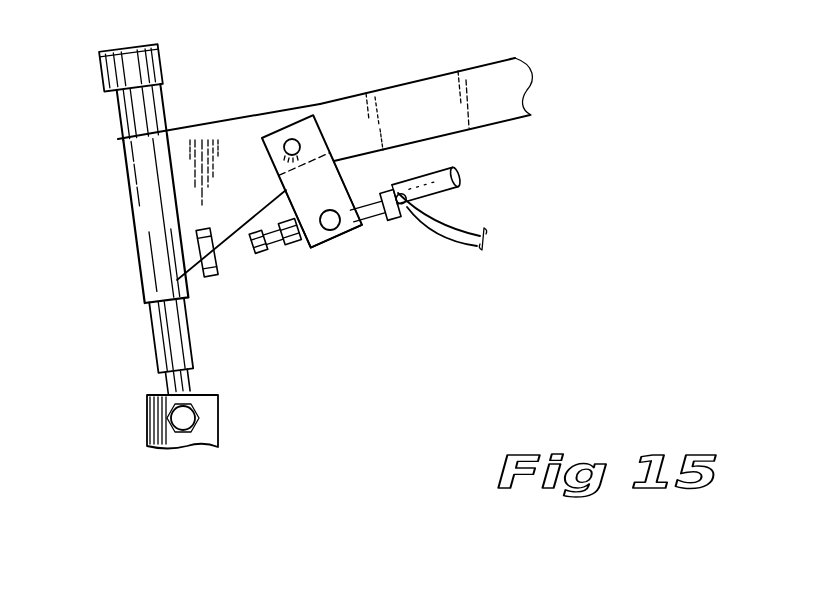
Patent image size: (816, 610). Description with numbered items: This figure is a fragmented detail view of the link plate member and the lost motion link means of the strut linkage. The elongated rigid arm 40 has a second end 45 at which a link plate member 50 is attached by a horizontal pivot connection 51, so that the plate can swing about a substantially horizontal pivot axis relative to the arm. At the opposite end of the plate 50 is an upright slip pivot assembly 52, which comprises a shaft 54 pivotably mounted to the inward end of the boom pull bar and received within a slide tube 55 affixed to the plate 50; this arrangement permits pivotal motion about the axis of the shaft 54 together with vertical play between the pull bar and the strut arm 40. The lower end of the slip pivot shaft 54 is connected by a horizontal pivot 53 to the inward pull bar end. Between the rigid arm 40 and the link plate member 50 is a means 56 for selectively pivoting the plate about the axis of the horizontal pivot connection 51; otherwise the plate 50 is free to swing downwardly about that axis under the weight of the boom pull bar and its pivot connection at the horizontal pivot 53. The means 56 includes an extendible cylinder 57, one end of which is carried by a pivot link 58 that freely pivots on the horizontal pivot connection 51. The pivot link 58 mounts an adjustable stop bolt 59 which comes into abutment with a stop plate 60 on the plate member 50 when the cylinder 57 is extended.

The rigid arm 40 is at (443, 125).
The second end of the rigid arm 45 is at (300, 108).
The link plate member 50 is at (237, 131).
The horizontal pivot connection 51 is at (287, 141).
The upright slip pivot assembly 52 is at (137, 260).
The horizontal pivot 53 is at (182, 418).
The shaft 54 is at (120, 111).
The slide tube 55 is at (137, 197).
The means for selectively pivoting the link plate member 56 is at (304, 259).
The extendible cylinder 57 is at (463, 197).
The pivot link 58 is at (290, 183).
The adjustable stop bolt 59 is at (262, 257).
The stop plate 60 is at (210, 277).